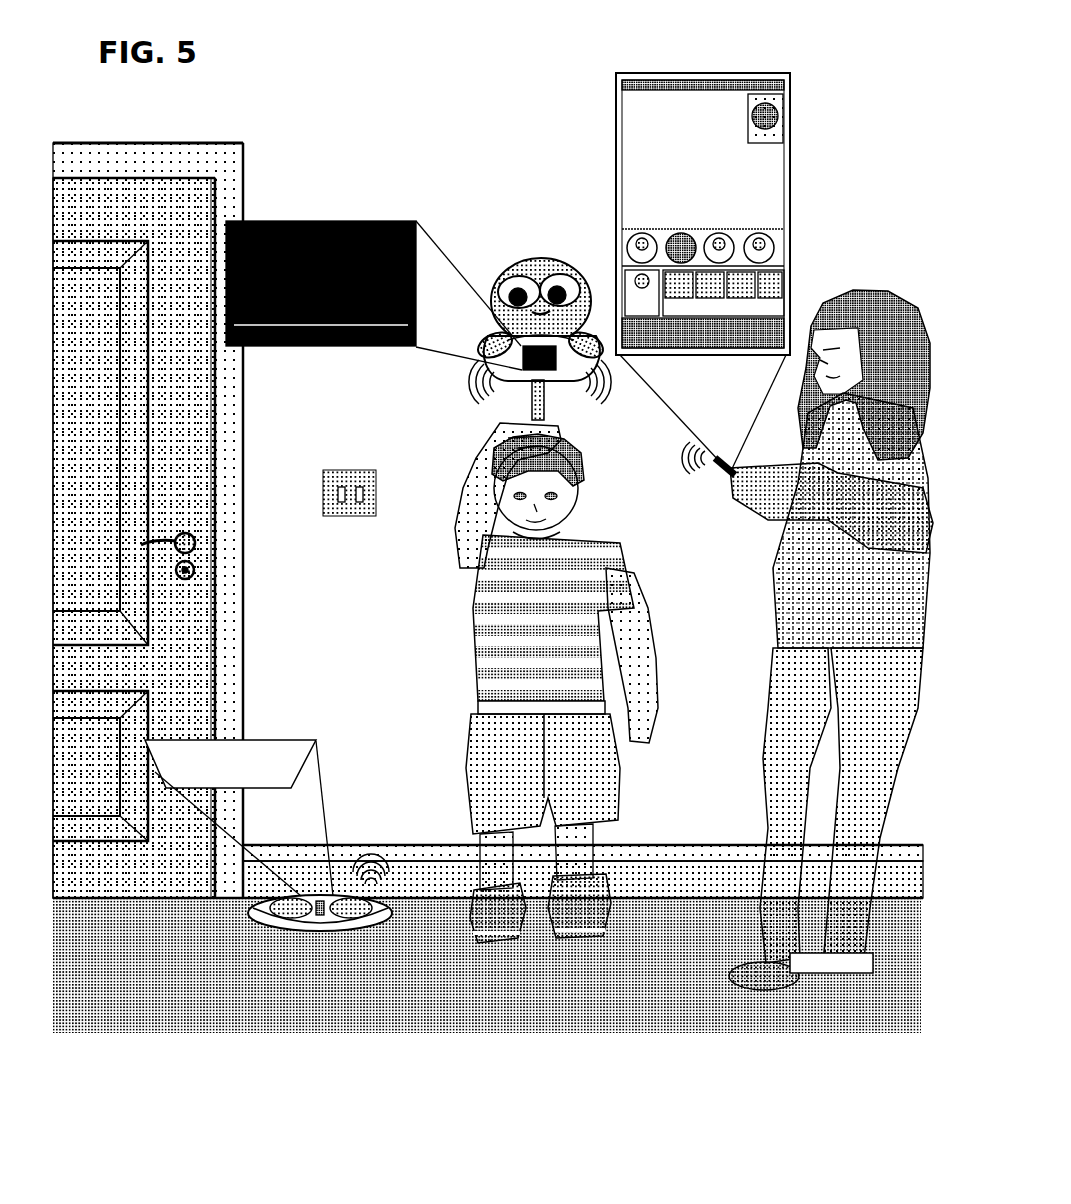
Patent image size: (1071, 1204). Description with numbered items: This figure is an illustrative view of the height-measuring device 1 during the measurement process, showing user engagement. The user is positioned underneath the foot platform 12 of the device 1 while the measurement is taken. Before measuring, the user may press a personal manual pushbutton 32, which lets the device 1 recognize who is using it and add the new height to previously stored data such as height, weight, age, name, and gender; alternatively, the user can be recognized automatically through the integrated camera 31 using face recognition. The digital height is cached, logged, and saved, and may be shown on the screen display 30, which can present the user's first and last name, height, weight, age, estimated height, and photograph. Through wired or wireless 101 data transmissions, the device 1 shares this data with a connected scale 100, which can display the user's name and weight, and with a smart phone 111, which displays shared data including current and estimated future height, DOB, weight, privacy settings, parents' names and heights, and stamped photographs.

The height-measuring device 1 is at (533, 256).
The foot platform 12 is at (542, 428).
The screen display 30 is at (322, 212).
The integrated camera 31 is at (517, 368).
The manual pushbutton 32 is at (497, 313).
The scale 100 is at (310, 926).
The wireless data transmission 101 is at (676, 448).
The smart phone 111 is at (608, 228).